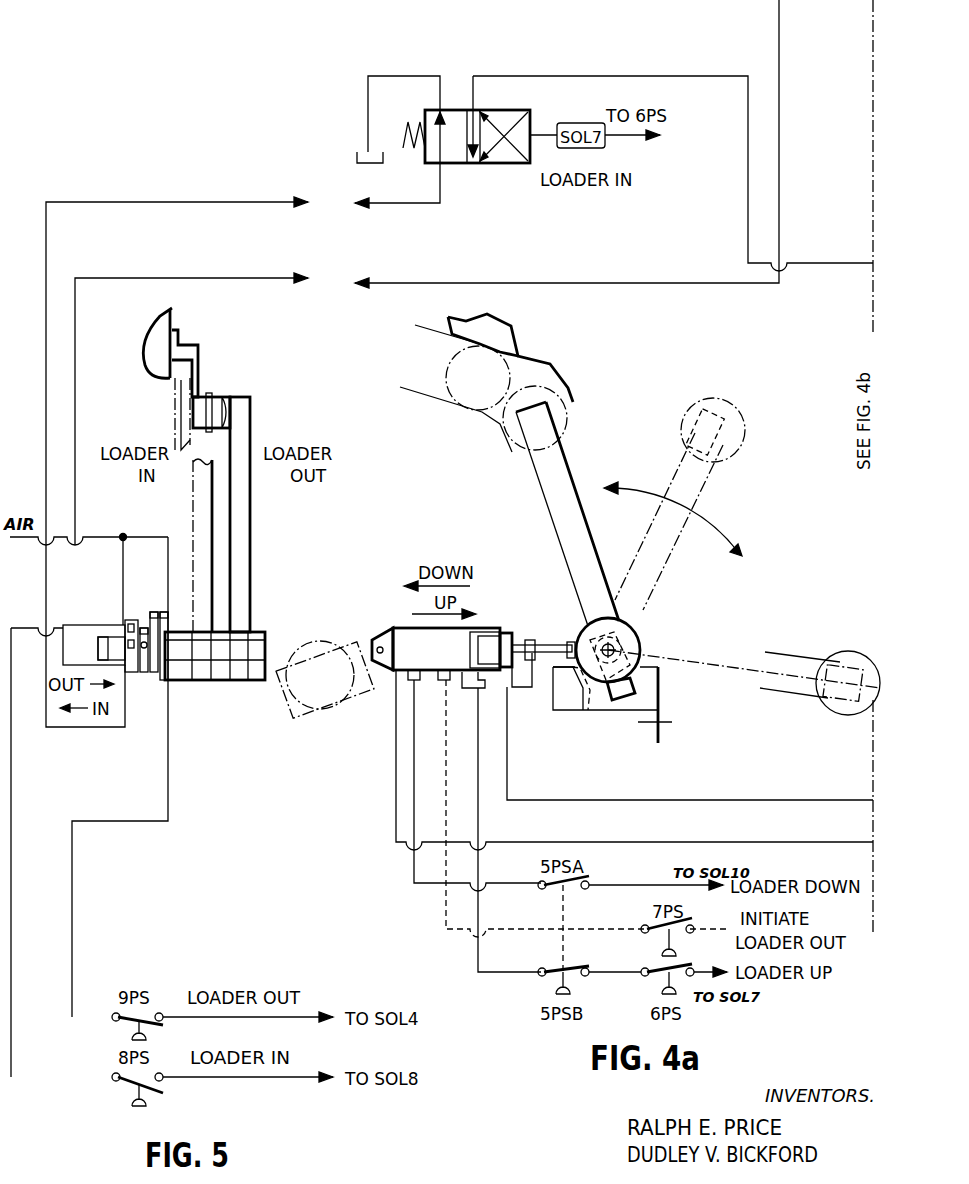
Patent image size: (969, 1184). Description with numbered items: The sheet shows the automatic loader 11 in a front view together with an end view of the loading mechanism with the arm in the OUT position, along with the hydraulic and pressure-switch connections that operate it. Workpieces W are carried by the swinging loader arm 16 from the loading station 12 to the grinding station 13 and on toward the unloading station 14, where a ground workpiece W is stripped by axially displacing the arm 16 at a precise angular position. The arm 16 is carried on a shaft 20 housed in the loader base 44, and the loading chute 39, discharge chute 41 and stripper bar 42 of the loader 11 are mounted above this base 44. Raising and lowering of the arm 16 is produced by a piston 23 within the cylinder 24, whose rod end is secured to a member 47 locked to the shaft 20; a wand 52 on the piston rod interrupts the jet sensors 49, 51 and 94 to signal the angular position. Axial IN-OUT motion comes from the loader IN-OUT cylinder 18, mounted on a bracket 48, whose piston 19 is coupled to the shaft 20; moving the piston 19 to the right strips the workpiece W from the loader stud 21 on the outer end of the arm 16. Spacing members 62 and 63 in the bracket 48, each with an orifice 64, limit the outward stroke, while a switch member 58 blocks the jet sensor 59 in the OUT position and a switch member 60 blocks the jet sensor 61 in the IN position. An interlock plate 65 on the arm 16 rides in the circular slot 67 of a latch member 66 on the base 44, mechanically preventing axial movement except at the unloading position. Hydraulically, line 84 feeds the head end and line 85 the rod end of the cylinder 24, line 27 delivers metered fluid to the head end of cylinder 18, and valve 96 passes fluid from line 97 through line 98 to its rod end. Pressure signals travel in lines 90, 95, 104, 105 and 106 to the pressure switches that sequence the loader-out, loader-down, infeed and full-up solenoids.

In FIG. 4A, the automatic loader 11 is at (538, 338).
In FIG. 4A, the loading station 12 is at (562, 404).
In FIG. 4A, the grinding station 13 is at (855, 656).
In FIG. 4A, the unloading station 14 is at (742, 412).
In FIG. 5, the loader arm 16 is at (190, 508).
In FIG. 4A, the loader arm 16 is at (542, 486).
In FIG. 5, the loader IN-OUT cylinder 18 is at (76, 640).
In FIG. 5, the piston 19 is at (131, 662).
In FIG. 5, the shaft 20 is at (262, 650).
In FIG. 4A, the shaft 20 is at (624, 636).
In FIG. 5, the loader stud 21 is at (216, 400).
In FIG. 4A, the piston 23 is at (490, 640).
In FIG. 4A, the cylinder 24 is at (398, 634).
In FIG. 5, the line 27 is at (236, 262).
In FIG. 4A, the line 27 is at (622, 283).
In FIG. 5, the adjustable loading chute 39 is at (158, 338).
In FIG. 5, the discharge chute 41 is at (342, 708).
In FIG. 5, the stripper bar 42 is at (185, 348).
In FIG. 4A, the loader base 44 is at (668, 724).
In FIG. 4A, the member 47 is at (570, 642).
In FIG. 5, the bracket 48 is at (144, 672).
In FIG. 4A, the jet sensor 49 is at (408, 680).
In FIG. 4A, the jet sensor 51 is at (480, 688).
In FIG. 4A, the wand 52 is at (528, 688).
In FIG. 5, the switch member 58 is at (150, 640).
In FIG. 5, the jet sensor 59 is at (164, 640).
In FIG. 5, the switch member 60 is at (125, 628).
In FIG. 5, the jet sensor 61 is at (128, 640).
In FIG. 5, the spacing member 62 is at (143, 630).
In FIG. 5, the spacing member 63 is at (155, 620).
In FIG. 5, the orifice 64 is at (168, 650).
In FIG. 4A, the interlock plate 65 is at (640, 644).
In FIG. 4A, the latch member 66 is at (660, 697).
In FIG. 4A, the circular slot 67 is at (586, 712).
In FIG. 4A, the line 84 is at (840, 844).
In FIG. 4A, the line 85 is at (840, 802).
In FIG. 4A, the line 90 is at (446, 912).
In FIG. 4A, the jet sensor 94 is at (444, 682).
In FIG. 5, the line 95 is at (11, 804).
In FIG. 4A, the valve 96 is at (512, 118).
In FIG. 4A, the line 97 is at (612, 78).
In FIG. 5, the line 98 is at (160, 204).
In FIG. 4A, the line 98 is at (410, 204).
In FIG. 4A, the line 104 is at (414, 868).
In FIG. 4A, the line 105 is at (628, 140).
In FIG. 5, the line 106 is at (188, 773).
In FIG. 5, the workpiece W is at (318, 646).
In FIG. 4A, the workpiece W is at (478, 392).